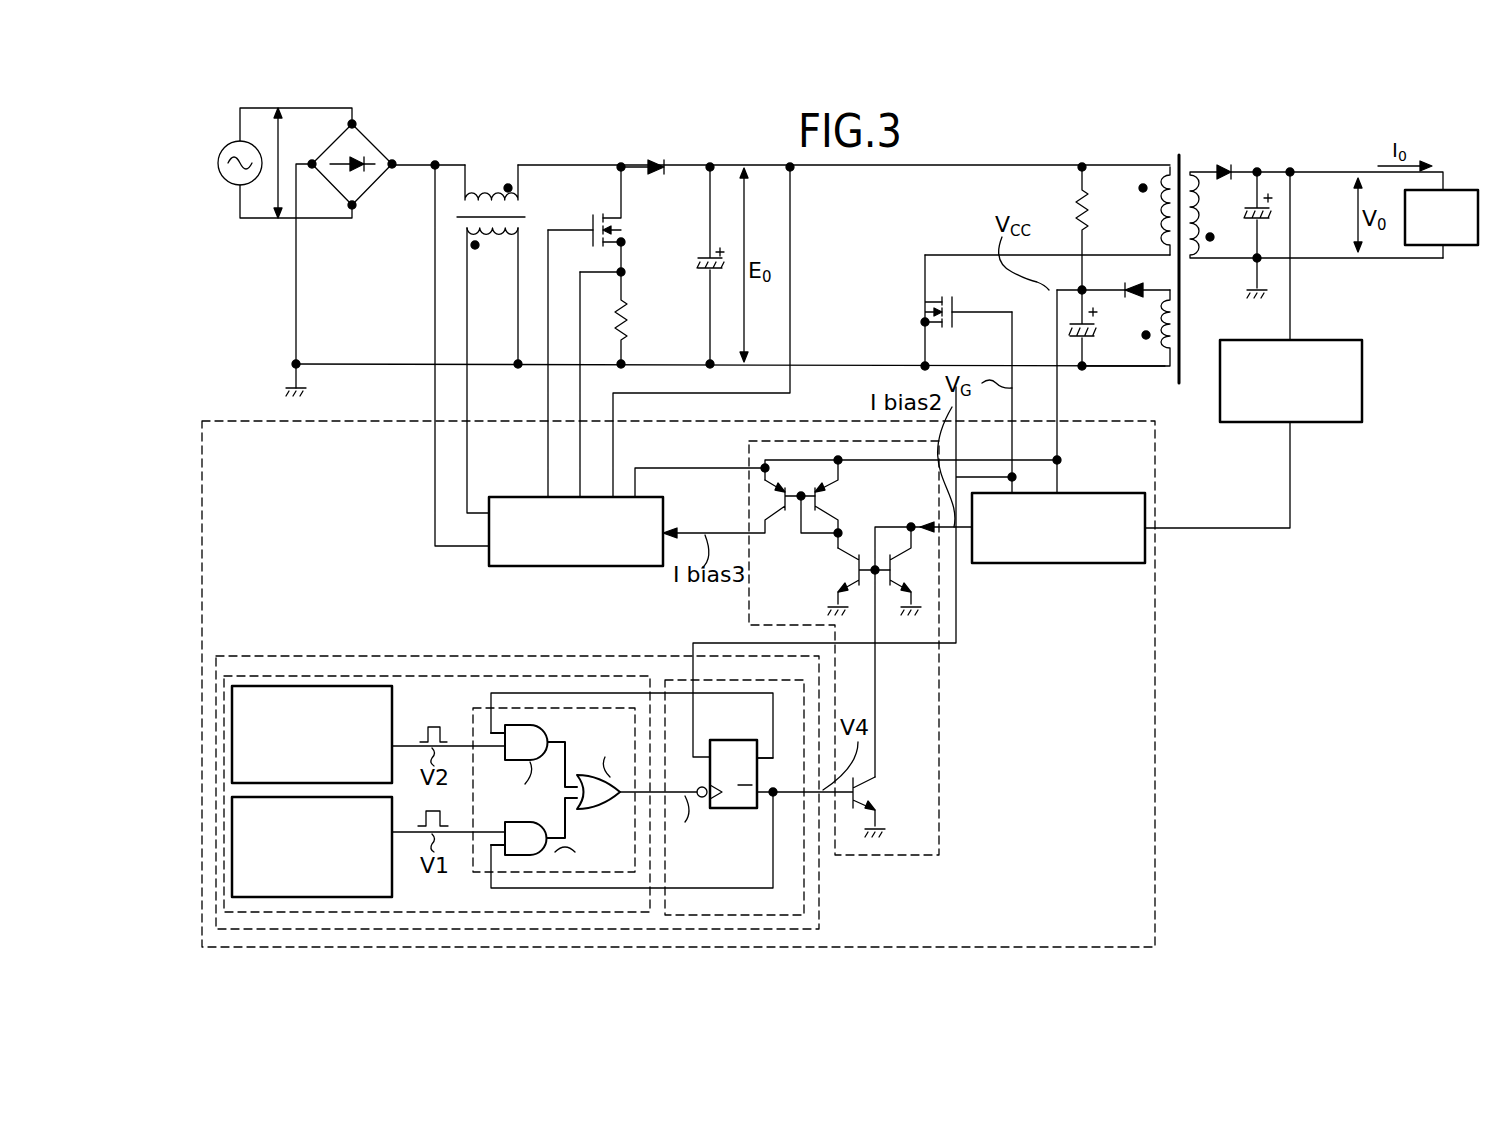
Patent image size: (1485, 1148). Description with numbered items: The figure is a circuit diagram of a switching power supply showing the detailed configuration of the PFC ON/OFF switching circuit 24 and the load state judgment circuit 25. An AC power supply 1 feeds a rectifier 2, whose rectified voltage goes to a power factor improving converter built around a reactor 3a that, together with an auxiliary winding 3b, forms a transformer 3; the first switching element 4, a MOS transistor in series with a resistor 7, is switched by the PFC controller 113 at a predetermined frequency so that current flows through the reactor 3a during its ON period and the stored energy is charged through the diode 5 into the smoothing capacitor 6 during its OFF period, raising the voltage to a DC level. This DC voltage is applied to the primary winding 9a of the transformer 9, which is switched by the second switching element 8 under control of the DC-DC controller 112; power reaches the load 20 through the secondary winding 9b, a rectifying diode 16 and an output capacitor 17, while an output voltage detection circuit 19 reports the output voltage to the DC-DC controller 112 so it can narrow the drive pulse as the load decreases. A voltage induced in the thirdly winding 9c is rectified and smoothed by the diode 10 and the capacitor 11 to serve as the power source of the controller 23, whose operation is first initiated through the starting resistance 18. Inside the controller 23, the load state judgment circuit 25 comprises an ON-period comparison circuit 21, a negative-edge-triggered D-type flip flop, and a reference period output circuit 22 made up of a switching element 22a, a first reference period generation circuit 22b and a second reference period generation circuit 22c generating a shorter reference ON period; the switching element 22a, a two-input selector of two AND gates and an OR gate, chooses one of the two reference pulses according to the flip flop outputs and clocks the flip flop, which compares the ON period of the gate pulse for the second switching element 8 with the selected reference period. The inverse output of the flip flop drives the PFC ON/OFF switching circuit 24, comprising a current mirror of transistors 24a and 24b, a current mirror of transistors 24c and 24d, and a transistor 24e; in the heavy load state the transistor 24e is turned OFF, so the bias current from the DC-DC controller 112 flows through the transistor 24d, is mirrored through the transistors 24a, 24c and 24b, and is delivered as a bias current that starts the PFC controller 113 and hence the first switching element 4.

The AC power supply 1 is at (222, 200).
The rectifier 2 is at (335, 190).
The transformer (PFC inductor) 3 is at (531, 210).
The reactor 3a is at (490, 180).
The auxiliary winding 3b is at (492, 240).
The first switching element 4 is at (624, 227).
The diode 5 is at (645, 165).
The smoothing capacitor 6 is at (695, 262).
The resistor 7 is at (621, 323).
The second switching element 8 is at (923, 305).
The transformer 9 is at (1180, 385).
The primary winding 9a is at (1163, 172).
The secondary winding 9b is at (1198, 258).
The thirdly winding 9c is at (1165, 353).
The diode 10 is at (1125, 285).
The capacitor 11 is at (1067, 325).
The rectifier diode 16 is at (1232, 166).
The output capacitor 17 is at (1272, 213).
The starting resistance 18 is at (1075, 217).
The output voltage detection circuit 19 is at (1318, 425).
The load 20 is at (1447, 190).
The ON-period comparison circuit 21 is at (804, 895).
The reference period output circuit 22 is at (393, 676).
The switching element 22a is at (558, 708).
The first reference period generation circuit 22b is at (392, 876).
The second reference period generation circuit 22c is at (392, 700).
The controller 23 is at (1155, 880).
The PFC ON/OFF switching circuit 24 is at (743, 452).
The transistor 24a is at (830, 504).
The transistor 24b is at (766, 502).
The transistor 24c is at (850, 576).
The transistor 24d is at (905, 571).
The transistor 24e is at (865, 788).
The load state judgment circuit 25 is at (266, 656).
The DC-DC controller 112 is at (1068, 565).
The power factor controller (PFC) 113 is at (488, 566).